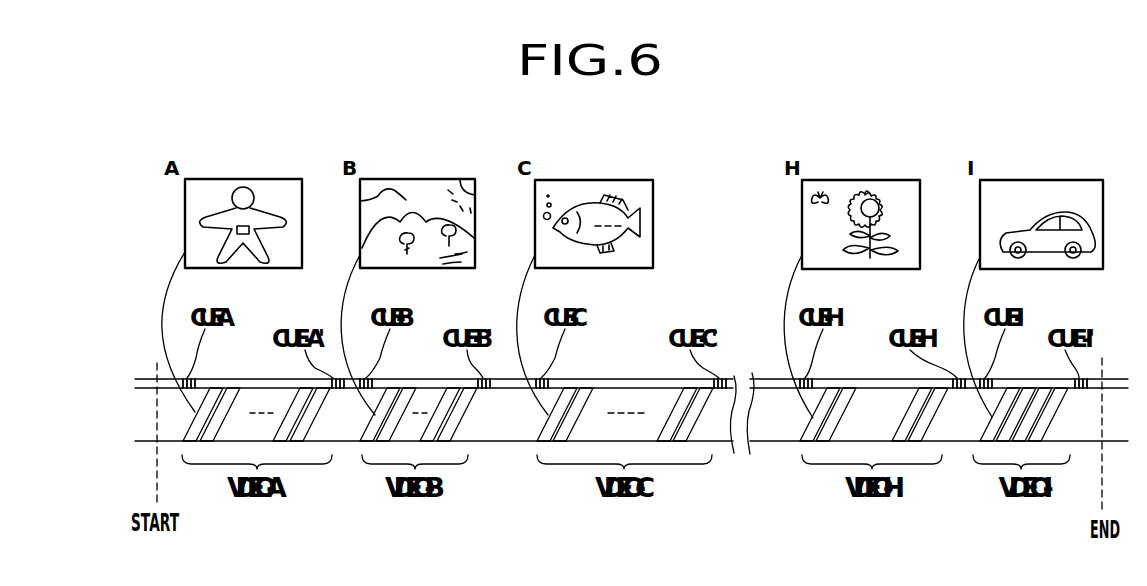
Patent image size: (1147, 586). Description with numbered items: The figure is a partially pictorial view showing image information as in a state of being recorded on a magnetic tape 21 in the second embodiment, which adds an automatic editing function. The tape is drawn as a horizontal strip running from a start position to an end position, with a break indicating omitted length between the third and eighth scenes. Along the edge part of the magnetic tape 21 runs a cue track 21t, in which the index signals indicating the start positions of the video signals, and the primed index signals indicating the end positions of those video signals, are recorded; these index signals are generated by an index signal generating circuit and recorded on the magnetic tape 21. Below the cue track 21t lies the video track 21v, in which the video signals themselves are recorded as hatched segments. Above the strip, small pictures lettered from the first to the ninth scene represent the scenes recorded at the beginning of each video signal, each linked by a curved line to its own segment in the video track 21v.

The magnetic tape 21 is at (128, 392).
The cue track 21t is at (142, 377).
The video track 21v is at (186, 427).